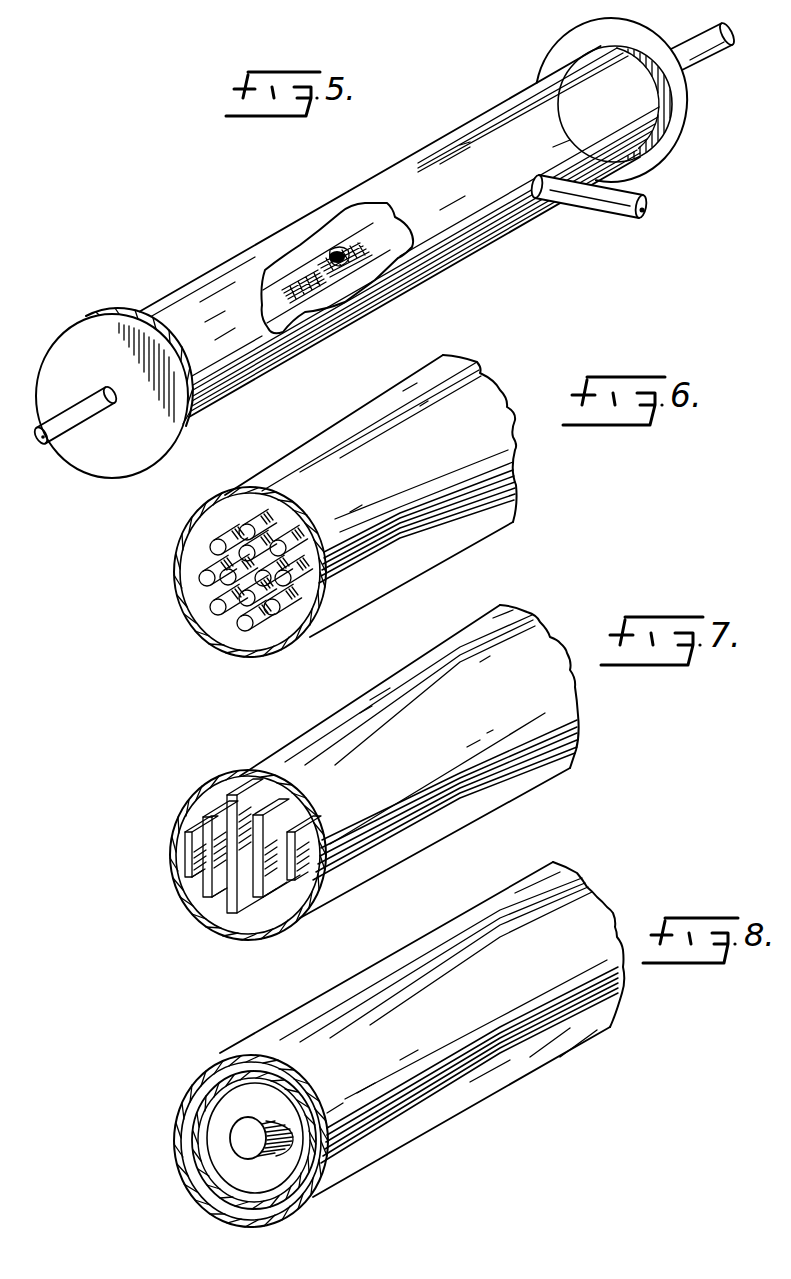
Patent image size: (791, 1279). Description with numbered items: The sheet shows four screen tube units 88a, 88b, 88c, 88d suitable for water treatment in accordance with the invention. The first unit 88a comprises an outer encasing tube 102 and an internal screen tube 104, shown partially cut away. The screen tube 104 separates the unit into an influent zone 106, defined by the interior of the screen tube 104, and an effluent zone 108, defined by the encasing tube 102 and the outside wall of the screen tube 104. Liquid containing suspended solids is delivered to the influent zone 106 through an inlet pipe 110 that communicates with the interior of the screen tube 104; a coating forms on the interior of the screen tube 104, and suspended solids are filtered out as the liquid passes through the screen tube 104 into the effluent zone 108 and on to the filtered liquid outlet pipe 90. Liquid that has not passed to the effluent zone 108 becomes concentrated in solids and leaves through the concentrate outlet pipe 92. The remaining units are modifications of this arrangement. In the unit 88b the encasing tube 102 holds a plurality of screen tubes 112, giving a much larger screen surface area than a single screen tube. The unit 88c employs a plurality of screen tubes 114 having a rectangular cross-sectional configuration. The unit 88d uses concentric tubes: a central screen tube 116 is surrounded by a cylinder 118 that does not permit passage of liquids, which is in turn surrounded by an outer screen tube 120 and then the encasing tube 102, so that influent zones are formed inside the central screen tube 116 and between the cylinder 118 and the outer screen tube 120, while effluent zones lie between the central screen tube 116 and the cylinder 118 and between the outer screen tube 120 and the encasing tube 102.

In FIG. 5, the screen tube unit 88a is at (165, 282).
In FIG. 5, the filtered liquid outlet pipe 90 is at (598, 205).
In FIG. 5, the concentrate outlet pipe 92 is at (36, 437).
In FIG. 5, the encasing tube 102 is at (212, 275).
In FIG. 6, the encasing tube 102 is at (463, 536).
In FIG. 7, the encasing tube 102 is at (552, 767).
In FIG. 8, the encasing tube 102 is at (270, 1032).
In FIG. 5, the screen tube 104 is at (398, 222).
In FIG. 5, the influent zone 106 is at (337, 257).
In FIG. 5, the effluent zone 108 is at (305, 312).
In FIG. 5, the inlet pipe 110 is at (720, 48).
In FIG. 6, the screen tube unit 88b is at (172, 591).
In FIG. 6, the screen tubes 112 is at (300, 510).
In FIG. 7, the screen tube unit 88c is at (175, 800).
In FIG. 7, the screen tubes 114 is at (265, 795).
In FIG. 8, the screen tube unit 88d is at (178, 1089).
In FIG. 8, the central screen tube 116 is at (267, 1117).
In FIG. 8, the cylinder 118 is at (297, 1123).
In FIG. 8, the outer screen tube 120 is at (287, 1145).